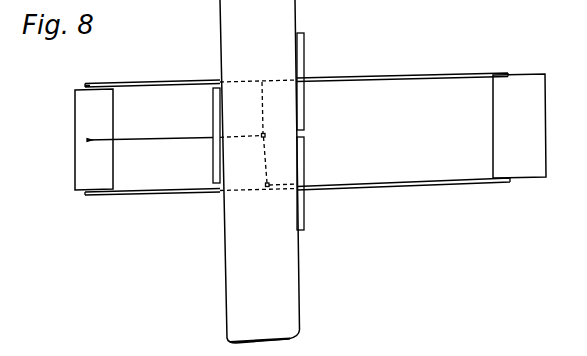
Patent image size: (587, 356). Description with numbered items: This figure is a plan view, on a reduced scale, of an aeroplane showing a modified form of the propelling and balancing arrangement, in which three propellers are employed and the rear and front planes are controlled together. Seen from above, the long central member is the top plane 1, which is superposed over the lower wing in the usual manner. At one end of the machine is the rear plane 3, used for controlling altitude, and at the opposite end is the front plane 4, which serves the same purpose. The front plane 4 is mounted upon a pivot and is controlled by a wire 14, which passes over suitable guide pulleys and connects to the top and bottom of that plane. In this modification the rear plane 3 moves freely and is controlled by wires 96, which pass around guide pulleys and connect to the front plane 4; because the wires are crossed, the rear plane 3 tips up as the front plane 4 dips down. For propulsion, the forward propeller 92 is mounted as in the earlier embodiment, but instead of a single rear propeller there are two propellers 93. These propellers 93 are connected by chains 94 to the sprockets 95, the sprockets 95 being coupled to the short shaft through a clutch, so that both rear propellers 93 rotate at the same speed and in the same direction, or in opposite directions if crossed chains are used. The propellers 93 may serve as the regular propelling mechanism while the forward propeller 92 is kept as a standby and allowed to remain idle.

The top plane 1 is at (260, 171).
The rear plane 3 is at (519, 126).
The front plane 4 is at (94, 139).
The wire 14 is at (160, 139).
The forward propeller 92 is at (213, 158).
The rear propellers 93 is at (306, 62).
The chains 94 is at (268, 134).
The sprockets 95 is at (266, 133).
The wires 96 is at (183, 82).